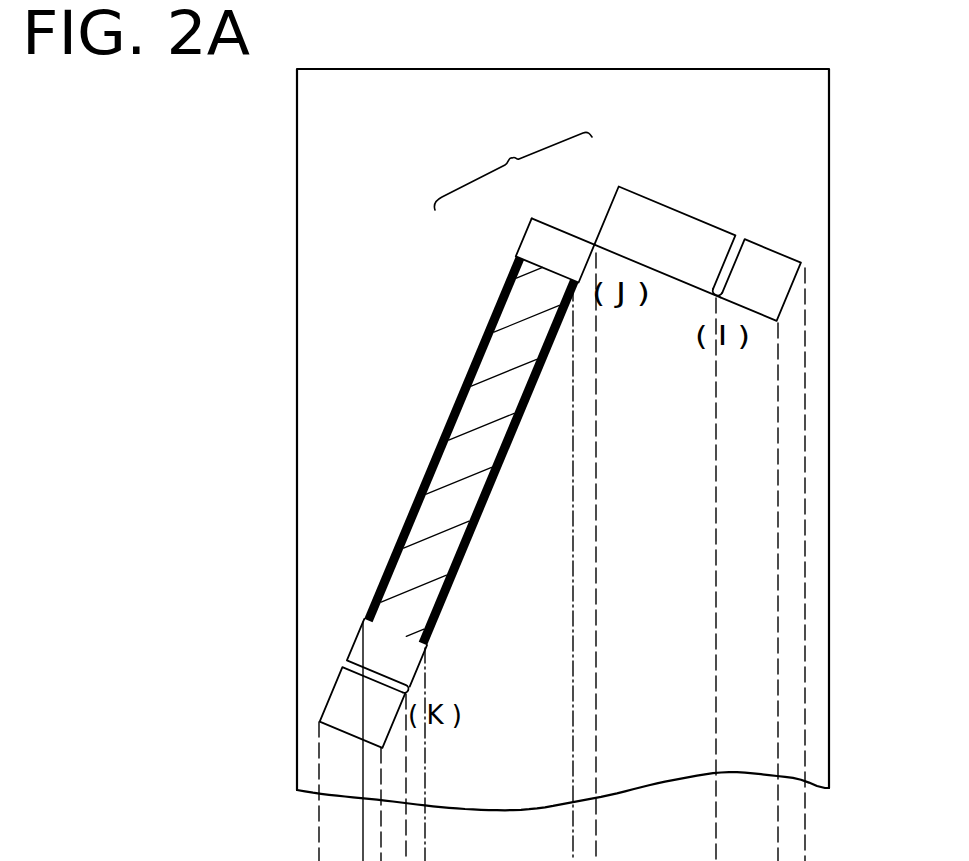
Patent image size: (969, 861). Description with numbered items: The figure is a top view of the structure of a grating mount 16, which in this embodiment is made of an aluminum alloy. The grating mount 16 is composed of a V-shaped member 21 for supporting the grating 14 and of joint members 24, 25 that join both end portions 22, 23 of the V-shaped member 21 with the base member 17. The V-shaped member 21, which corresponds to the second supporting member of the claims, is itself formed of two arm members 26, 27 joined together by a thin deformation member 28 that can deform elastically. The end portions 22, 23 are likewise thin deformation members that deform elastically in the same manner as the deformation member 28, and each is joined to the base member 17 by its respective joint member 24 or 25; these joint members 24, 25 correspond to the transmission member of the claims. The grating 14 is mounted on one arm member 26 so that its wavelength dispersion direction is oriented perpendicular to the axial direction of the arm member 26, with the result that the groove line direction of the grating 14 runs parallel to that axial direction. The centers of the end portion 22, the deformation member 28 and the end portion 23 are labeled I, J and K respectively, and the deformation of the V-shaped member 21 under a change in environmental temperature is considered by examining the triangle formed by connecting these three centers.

The grating 14 is at (468, 408).
The grating mount 16 is at (676, 163).
The base member 17 is at (318, 302).
The V-shaped member 21 is at (577, 208).
The end portion 22 is at (714, 296).
The end portion 23 is at (417, 684).
The joint member 24 is at (784, 273).
The joint member 25 is at (342, 698).
The arm member 26 is at (537, 245).
The arm member 27 is at (622, 214).
The deformation member 28 is at (593, 243).